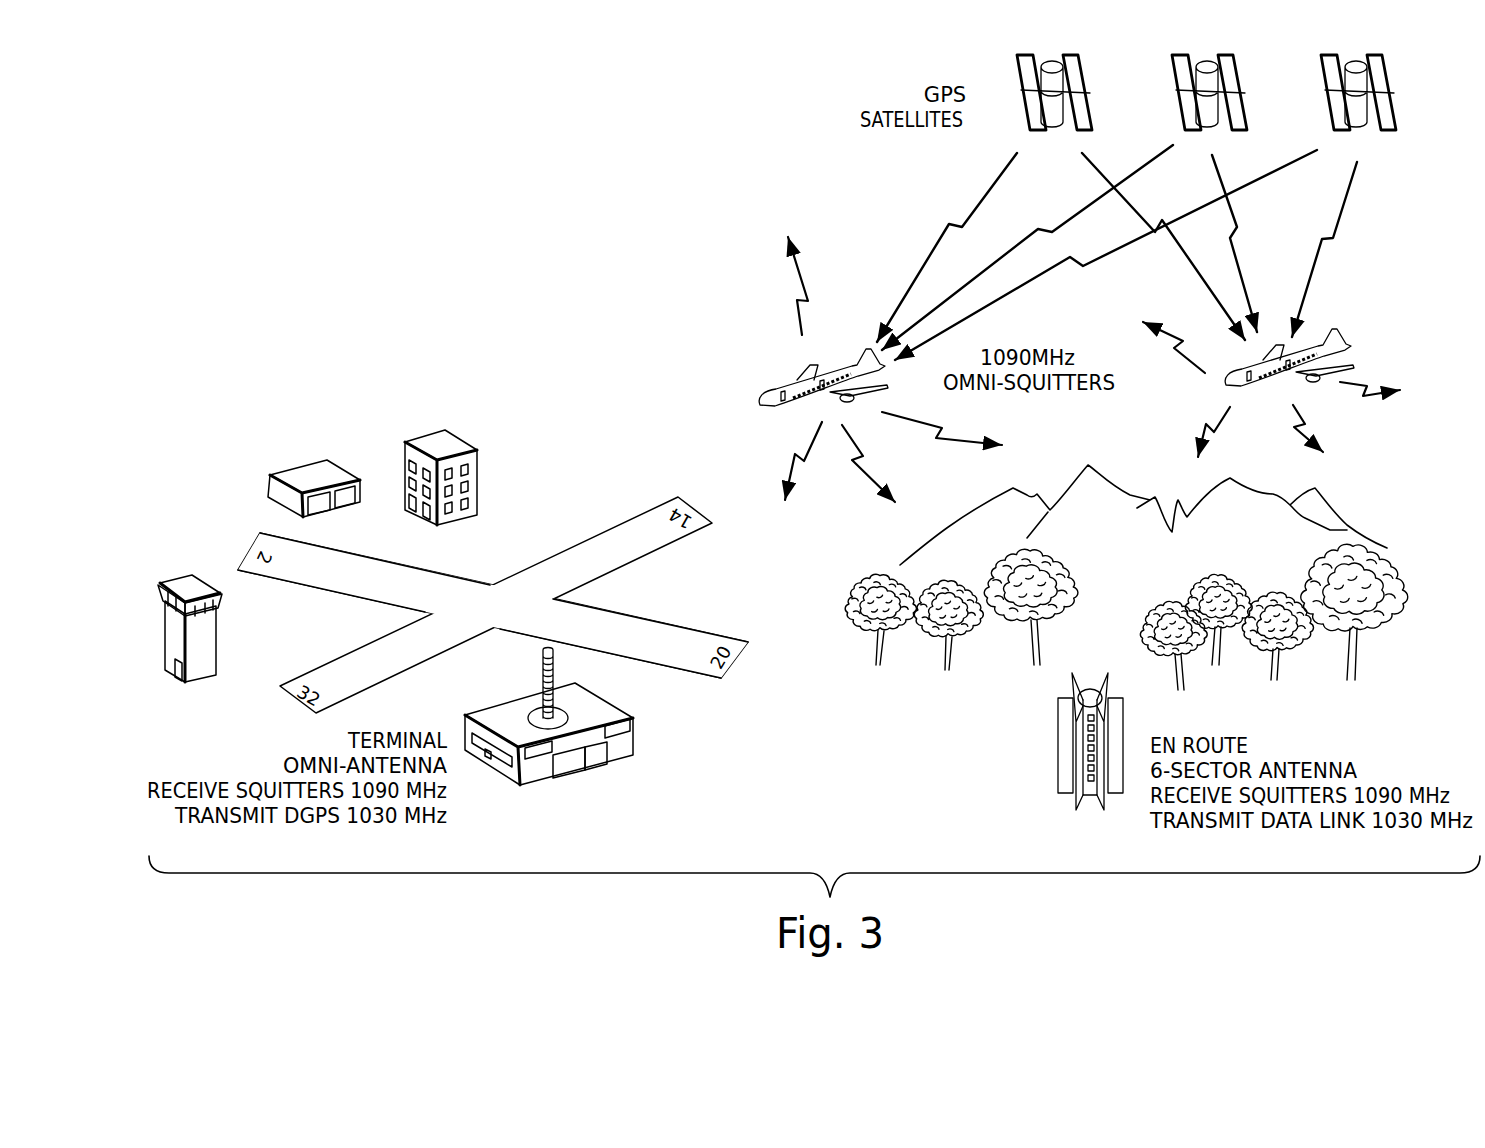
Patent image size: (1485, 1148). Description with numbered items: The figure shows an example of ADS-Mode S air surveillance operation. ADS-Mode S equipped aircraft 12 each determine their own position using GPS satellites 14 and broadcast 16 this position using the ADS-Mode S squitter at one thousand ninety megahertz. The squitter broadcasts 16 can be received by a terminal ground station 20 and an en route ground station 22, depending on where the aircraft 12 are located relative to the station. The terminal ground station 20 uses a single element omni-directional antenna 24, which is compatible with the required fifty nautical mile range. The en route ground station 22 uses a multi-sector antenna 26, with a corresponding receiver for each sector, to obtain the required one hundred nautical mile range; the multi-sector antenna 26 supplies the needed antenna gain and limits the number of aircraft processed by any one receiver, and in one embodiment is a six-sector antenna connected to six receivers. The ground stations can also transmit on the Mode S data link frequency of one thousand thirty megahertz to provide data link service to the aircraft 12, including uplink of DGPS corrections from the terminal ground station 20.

The ADS-Mode S equipped aircraft 12 is at (766, 398).
The GPS satellites 14 is at (1021, 92).
The squitter broadcasts 16 is at (800, 282).
The terminal ground station 20 is at (561, 717).
The en route ground station 22 is at (1088, 737).
The omni-directional antenna 24 is at (554, 676).
The multi-sector antenna 26 is at (1135, 682).